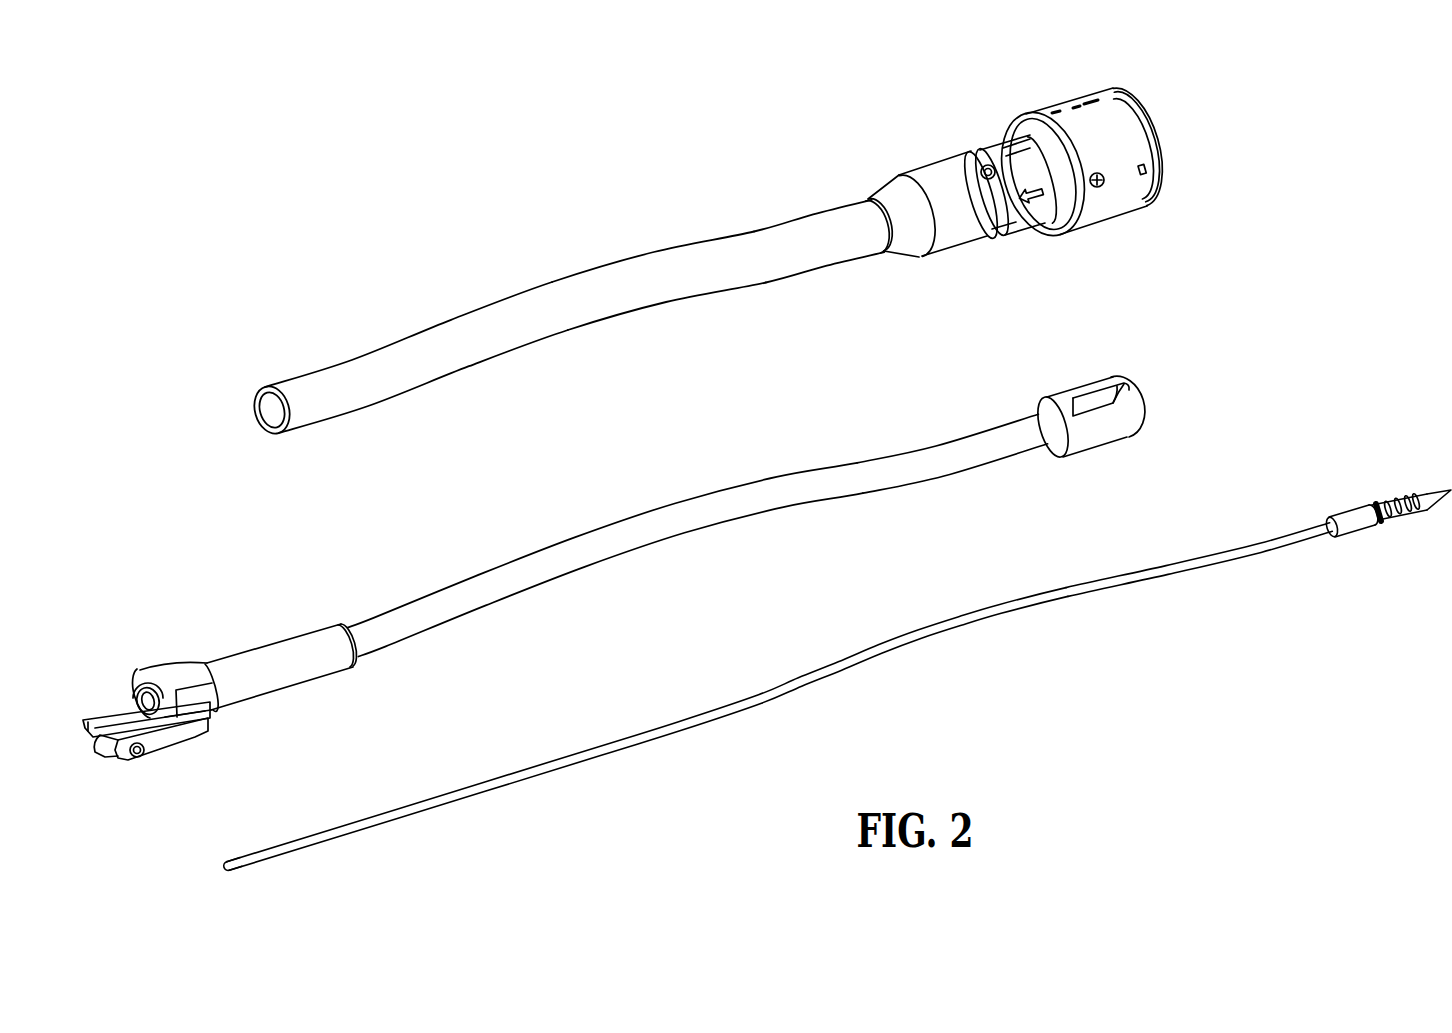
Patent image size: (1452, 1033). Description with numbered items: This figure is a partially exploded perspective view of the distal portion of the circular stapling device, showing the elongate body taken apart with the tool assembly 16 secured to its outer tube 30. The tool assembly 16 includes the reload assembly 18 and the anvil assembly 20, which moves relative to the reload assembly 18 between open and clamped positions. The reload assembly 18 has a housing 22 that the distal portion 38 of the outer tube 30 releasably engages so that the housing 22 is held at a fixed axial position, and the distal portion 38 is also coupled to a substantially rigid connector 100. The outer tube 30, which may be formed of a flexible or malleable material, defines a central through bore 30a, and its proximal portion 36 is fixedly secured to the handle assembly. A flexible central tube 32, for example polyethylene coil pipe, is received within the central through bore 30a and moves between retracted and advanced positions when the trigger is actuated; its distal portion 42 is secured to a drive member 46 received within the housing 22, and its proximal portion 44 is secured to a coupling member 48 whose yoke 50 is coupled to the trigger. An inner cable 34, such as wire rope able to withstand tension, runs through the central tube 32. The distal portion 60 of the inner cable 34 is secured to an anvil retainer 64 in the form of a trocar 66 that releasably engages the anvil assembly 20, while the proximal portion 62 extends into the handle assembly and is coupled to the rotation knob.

The tool assembly 16 is at (1037, 163).
The reload assembly 18 is at (1097, 170).
The anvil assembly 20 is at (1160, 130).
The housing 22 is at (1032, 228).
The connector 100 is at (917, 180).
The outer tube 30 is at (566, 315).
The central through bore 30a is at (270, 427).
The proximal portion 36 is at (408, 393).
The distal portion 38 is at (847, 215).
The central tube 32 is at (614, 598).
The distal portion 42 is at (1003, 449).
The proximal portion 44 is at (388, 646).
The drive member 46 is at (1105, 433).
The coupling member 48 is at (210, 650).
The yoke 50 is at (118, 760).
The inner cable 34 is at (837, 666).
The distal portion 60 is at (1282, 549).
The proximal portion 62 is at (250, 868).
The anvil retainer 64 is at (1356, 534).
The trocar 66 is at (1407, 493).